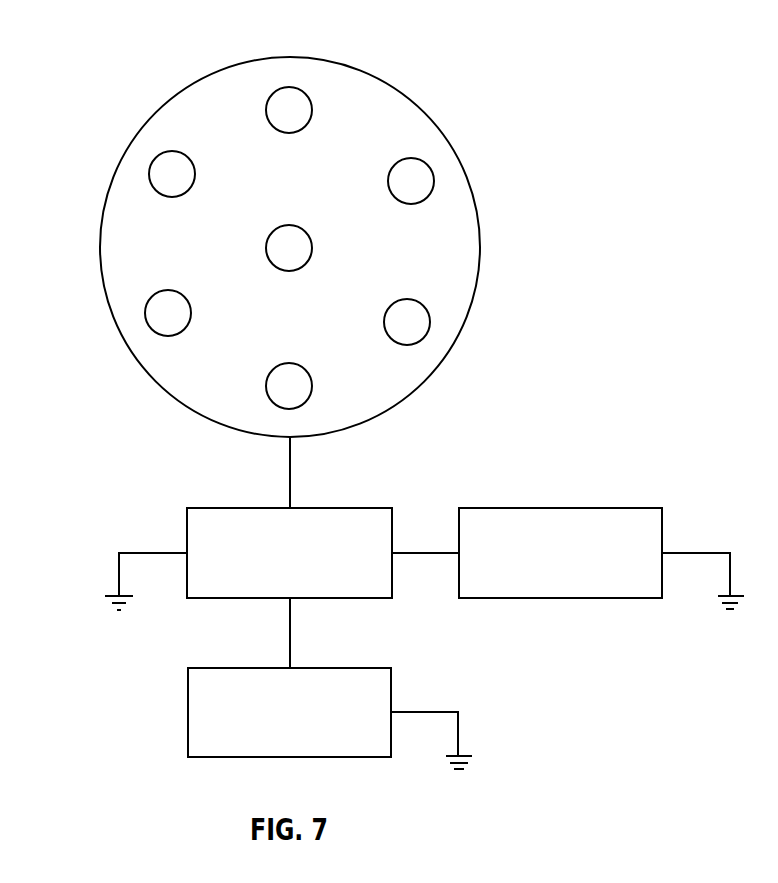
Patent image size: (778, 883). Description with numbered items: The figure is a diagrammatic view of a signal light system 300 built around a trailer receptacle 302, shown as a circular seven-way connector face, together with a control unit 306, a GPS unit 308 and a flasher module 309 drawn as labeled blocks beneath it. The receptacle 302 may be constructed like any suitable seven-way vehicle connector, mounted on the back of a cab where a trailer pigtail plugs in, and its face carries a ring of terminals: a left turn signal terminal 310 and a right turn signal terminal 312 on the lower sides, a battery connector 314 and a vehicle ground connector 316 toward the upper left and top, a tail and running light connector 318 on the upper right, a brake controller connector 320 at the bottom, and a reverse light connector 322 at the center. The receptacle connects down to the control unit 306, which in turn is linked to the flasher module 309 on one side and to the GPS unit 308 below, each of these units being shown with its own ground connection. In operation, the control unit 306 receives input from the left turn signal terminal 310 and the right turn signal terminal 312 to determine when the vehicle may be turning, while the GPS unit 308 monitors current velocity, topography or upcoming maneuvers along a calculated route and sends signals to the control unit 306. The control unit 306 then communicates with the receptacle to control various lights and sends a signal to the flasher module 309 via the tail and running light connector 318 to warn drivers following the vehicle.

The signal light system 300 is at (101, 32).
The housing 302 is at (290, 58).
The control unit 306 is at (358, 508).
The GPS unit 308 is at (358, 668).
The flasher module 309 is at (630, 508).
The left turn signal terminal 310 is at (145, 313).
The right turn signal terminal 312 is at (430, 322).
The battery connector 314 is at (149, 174).
The vehicle ground connector 316 is at (312, 110).
The tail and running light connector 318 is at (434, 181).
The brake controller connector 320 is at (277, 406).
The reverse light connector 322 is at (312, 248).